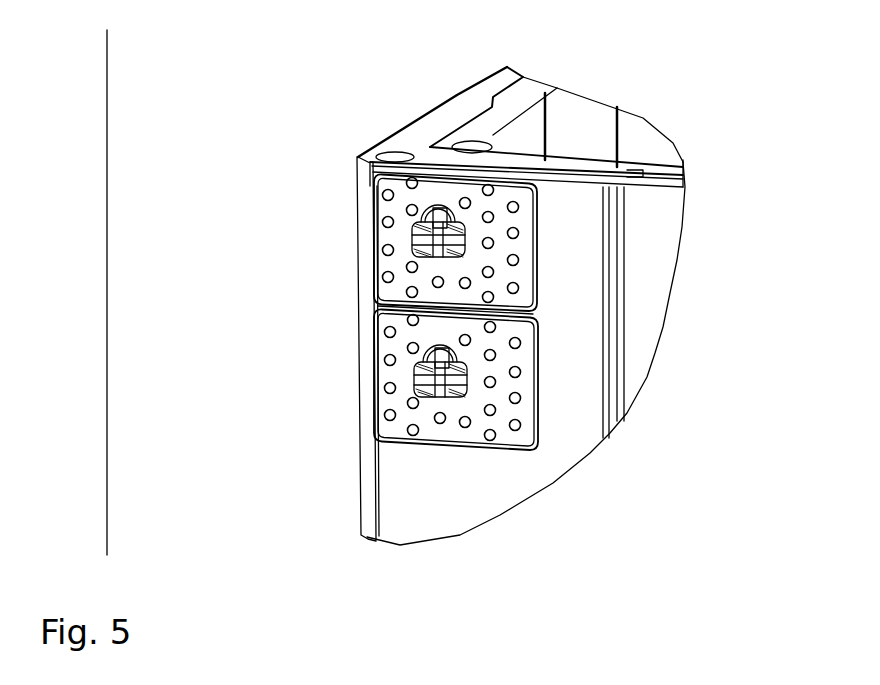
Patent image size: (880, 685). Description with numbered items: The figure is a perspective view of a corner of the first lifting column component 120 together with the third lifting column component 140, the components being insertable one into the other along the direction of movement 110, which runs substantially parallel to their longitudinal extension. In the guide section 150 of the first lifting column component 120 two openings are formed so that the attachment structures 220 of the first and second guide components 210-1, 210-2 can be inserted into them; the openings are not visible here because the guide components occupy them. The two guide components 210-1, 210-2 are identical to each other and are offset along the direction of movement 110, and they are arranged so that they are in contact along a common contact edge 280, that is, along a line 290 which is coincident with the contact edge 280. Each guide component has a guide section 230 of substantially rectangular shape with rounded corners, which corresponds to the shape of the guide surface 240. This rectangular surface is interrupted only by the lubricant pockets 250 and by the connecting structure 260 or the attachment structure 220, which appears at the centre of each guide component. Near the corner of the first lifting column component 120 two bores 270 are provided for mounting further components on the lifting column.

The direction of movement 110 is at (107, 278).
The first lifting column component 120 is at (413, 117).
The third lifting column component 140 is at (530, 100).
The guide section 150 is at (587, 230).
The first guide component 210-1 is at (537, 279).
The second guide component 210-2 is at (375, 428).
The attachment structure 220 is at (561, 411).
The connecting structure 260 is at (428, 422).
The guide section 230 is at (515, 216).
The guide surface 240 is at (591, 369).
The lubricant pockets 250 is at (388, 193).
The bores 270 is at (455, 145).
The contact edge 280 is at (417, 313).
The line 290 is at (352, 362).